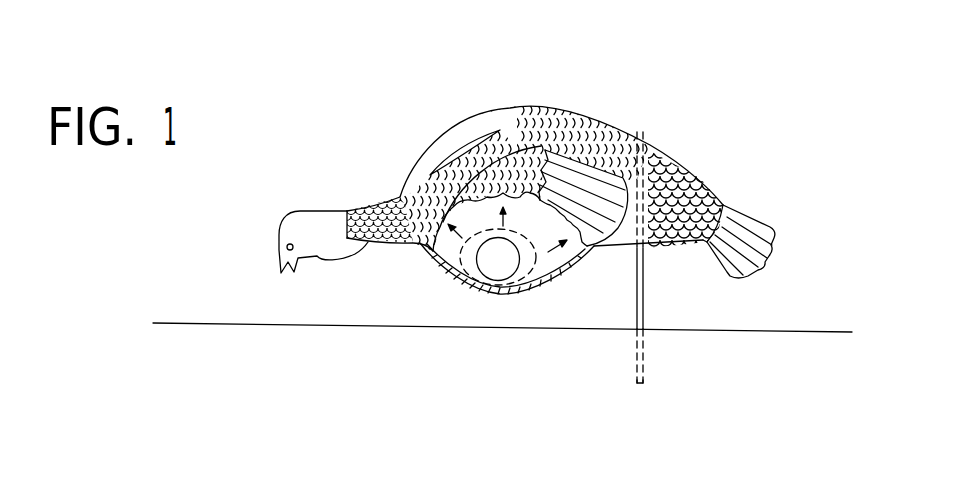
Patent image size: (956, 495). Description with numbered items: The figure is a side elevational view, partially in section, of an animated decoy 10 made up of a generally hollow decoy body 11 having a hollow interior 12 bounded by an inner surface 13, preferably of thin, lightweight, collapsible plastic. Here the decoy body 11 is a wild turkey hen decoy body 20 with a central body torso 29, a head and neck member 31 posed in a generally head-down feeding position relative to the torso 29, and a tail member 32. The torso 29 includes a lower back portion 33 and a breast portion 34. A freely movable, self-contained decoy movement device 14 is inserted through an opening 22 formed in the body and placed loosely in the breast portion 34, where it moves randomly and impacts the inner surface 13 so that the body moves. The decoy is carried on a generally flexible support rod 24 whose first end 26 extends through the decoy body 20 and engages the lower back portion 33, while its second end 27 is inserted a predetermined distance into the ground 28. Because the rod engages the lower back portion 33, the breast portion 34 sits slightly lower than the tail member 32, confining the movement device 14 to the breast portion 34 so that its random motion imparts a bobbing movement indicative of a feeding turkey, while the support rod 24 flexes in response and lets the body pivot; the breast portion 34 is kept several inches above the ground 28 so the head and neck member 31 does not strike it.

The animated decoy 10 is at (352, 140).
The decoy body 11 is at (560, 122).
The hollow interior 12 is at (445, 246).
The inner surface 13 is at (562, 265).
The decoy movement device 14 is at (493, 270).
The wild turkey hen decoy body 20 is at (606, 117).
The opening 22 is at (452, 152).
The support rod 24 is at (645, 303).
The first end 26 is at (648, 145).
The second end 27 is at (646, 366).
The ground 28 is at (764, 331).
The central body torso 29 is at (492, 122).
The head and neck member 31 is at (348, 211).
The tail member 32 is at (752, 222).
The lower back portion 33 is at (667, 168).
The breast portion 34 is at (500, 296).